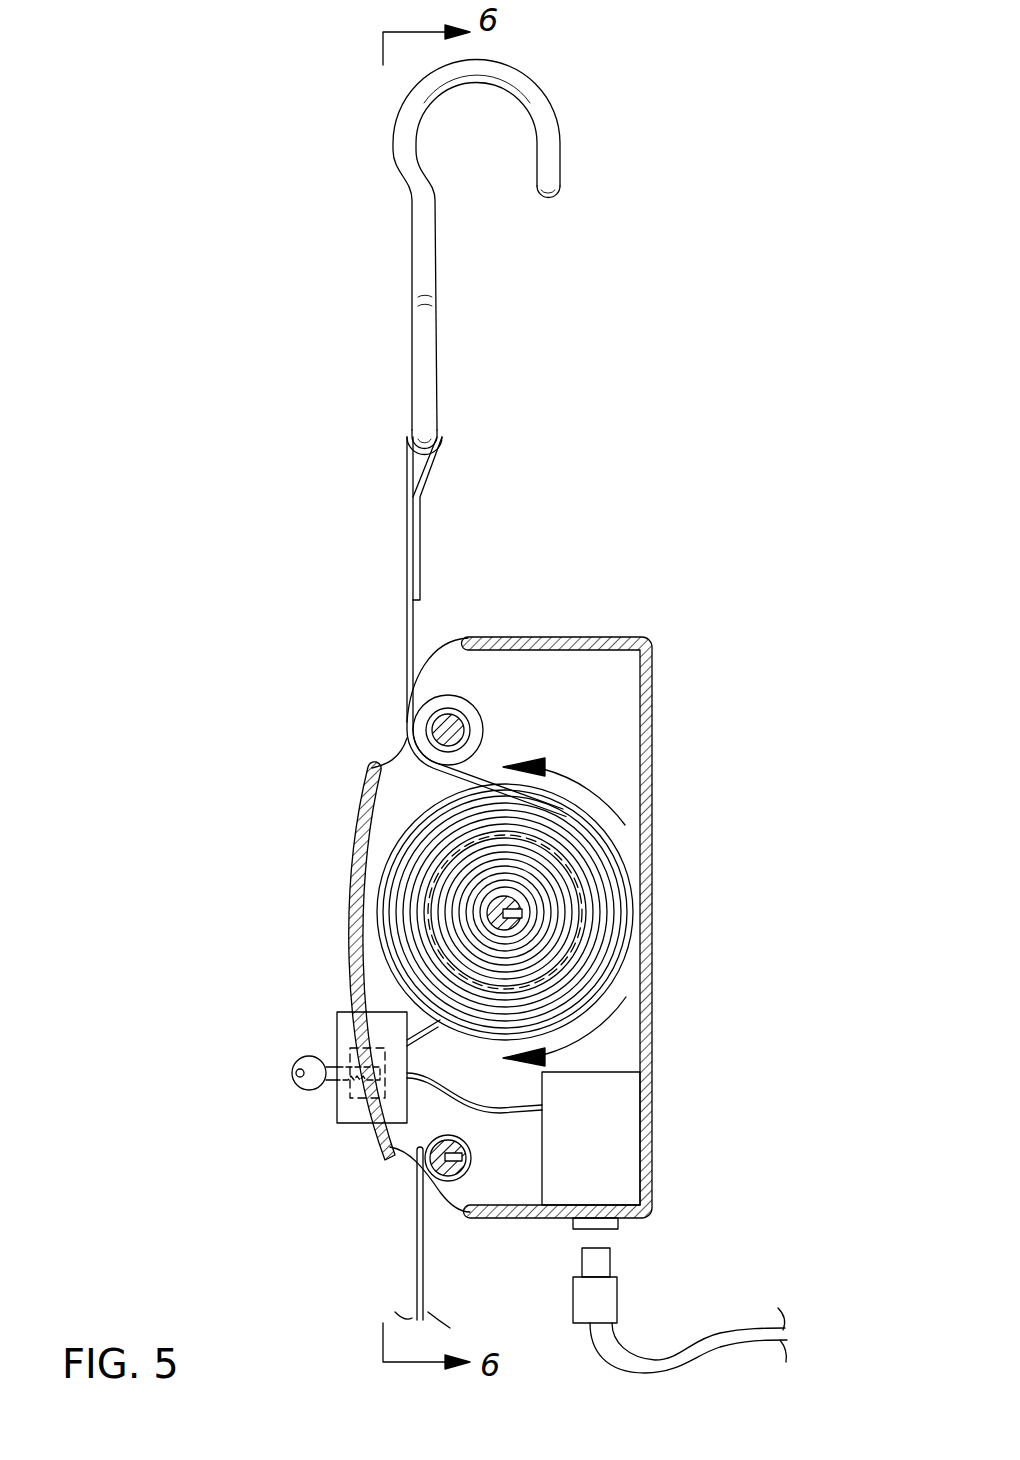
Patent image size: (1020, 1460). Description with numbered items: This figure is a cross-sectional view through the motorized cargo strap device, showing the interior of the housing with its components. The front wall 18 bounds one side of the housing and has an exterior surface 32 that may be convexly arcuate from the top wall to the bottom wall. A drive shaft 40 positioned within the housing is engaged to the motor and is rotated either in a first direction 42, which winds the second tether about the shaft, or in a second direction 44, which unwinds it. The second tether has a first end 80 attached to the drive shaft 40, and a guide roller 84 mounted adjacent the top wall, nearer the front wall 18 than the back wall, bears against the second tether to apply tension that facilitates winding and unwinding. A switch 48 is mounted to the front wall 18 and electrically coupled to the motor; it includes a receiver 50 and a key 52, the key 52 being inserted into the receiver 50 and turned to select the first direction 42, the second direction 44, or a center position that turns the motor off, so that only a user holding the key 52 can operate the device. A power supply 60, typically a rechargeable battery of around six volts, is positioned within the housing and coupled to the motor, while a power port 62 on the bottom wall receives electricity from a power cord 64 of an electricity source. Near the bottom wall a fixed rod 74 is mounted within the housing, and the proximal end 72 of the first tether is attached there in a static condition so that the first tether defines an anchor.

The front wall 18 is at (363, 810).
The exterior surface 32 is at (350, 862).
The guide roller 84 is at (452, 735).
The drive shaft 40 is at (508, 932).
The first end 80 is at (522, 914).
The second direction 44 is at (587, 780).
The first direction 42 is at (588, 1030).
The switch 48 is at (283, 1024).
The receiver 50 is at (350, 1087).
The key 52 is at (290, 1073).
The power supply 60 is at (582, 1130).
The power port 62 is at (610, 1228).
The power cord 64 is at (698, 1336).
The fixed rod 74 is at (380, 1153).
The proximal end 72 is at (416, 1192).